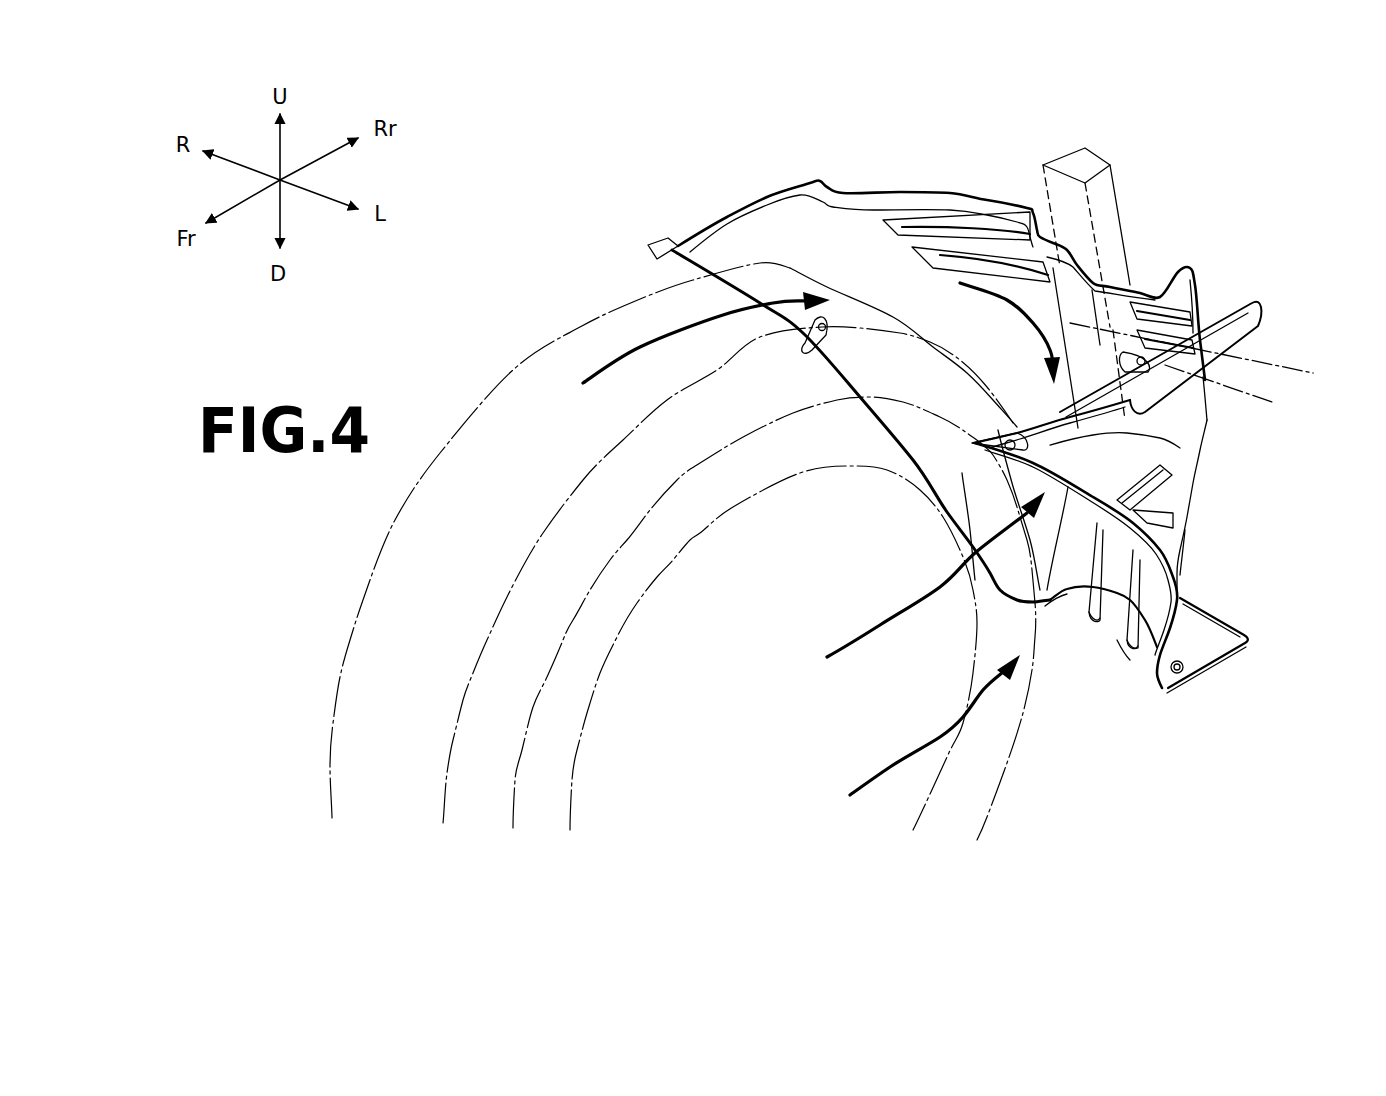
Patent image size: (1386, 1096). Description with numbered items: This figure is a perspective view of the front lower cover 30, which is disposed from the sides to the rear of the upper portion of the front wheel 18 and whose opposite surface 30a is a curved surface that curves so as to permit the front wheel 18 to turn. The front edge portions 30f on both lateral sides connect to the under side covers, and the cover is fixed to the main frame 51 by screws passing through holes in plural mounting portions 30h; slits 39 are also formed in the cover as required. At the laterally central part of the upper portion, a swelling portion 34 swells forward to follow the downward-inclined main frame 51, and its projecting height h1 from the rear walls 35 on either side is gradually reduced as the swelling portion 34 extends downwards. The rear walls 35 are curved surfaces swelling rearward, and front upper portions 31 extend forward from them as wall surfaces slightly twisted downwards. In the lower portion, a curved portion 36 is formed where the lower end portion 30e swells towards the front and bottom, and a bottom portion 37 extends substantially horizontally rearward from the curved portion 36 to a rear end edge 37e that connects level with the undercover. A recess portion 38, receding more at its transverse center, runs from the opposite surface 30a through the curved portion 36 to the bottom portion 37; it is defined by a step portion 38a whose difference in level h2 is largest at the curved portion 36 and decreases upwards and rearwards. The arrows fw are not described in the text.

The front wheel 18 is at (513, 370).
The front lower cover 30 is at (903, 168).
The front upper portions 31 is at (720, 250).
The swelling portion 34 is at (1077, 300).
The rear walls 35 is at (997, 201).
The curved portion 36 is at (1056, 611).
The bottom portion 37 is at (1193, 618).
The rear end edge 37e is at (1220, 613).
The recess portion 38 is at (1103, 607).
The step portion 38a is at (1022, 604).
The slits 39 is at (963, 256).
The main frame 51 is at (1067, 152).
The opposite surface 30a is at (970, 355).
The lower end portion 30e is at (1124, 664).
The front edge portions 30f is at (697, 300).
The mounting portions 30h is at (823, 333).
The projecting height h1 is at (1268, 402).
The difference in level h2 is at (1079, 592).
The travelling wind flow fw is at (633, 343).